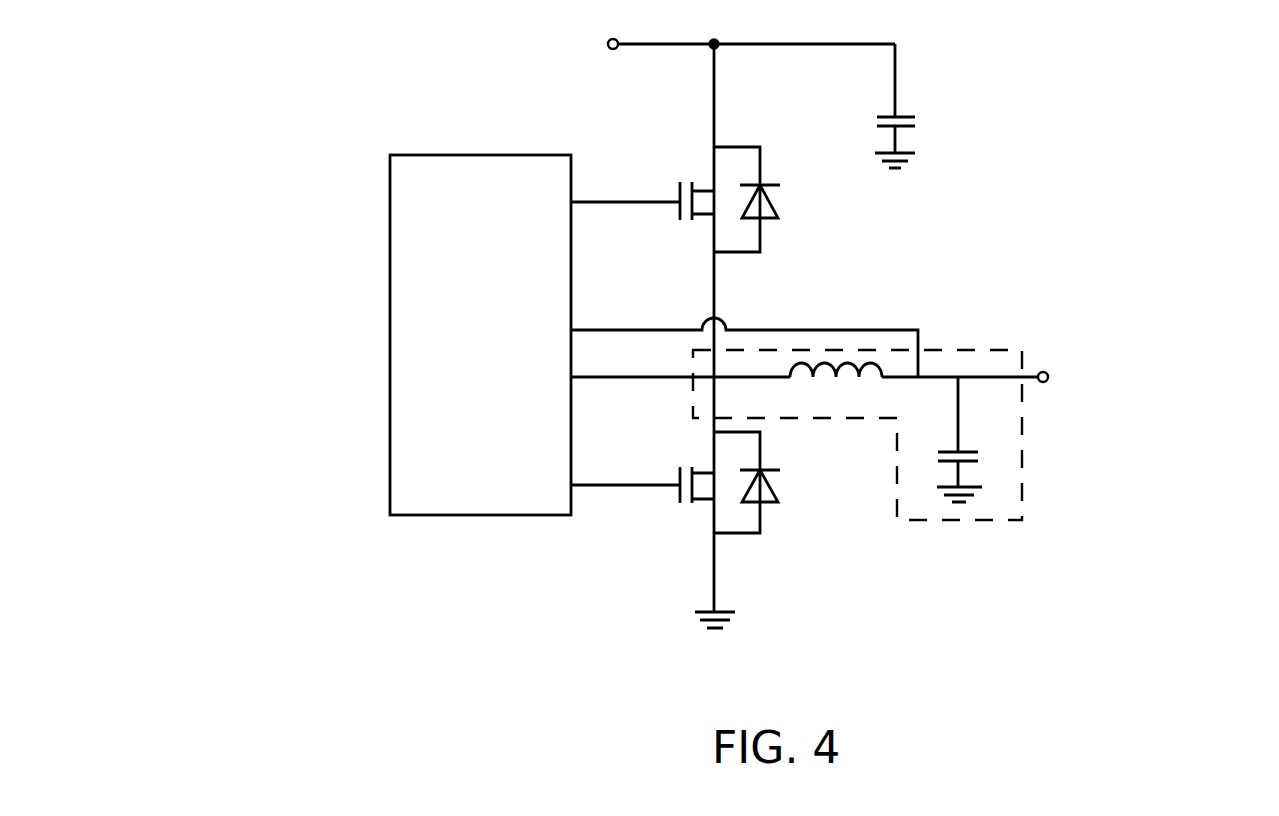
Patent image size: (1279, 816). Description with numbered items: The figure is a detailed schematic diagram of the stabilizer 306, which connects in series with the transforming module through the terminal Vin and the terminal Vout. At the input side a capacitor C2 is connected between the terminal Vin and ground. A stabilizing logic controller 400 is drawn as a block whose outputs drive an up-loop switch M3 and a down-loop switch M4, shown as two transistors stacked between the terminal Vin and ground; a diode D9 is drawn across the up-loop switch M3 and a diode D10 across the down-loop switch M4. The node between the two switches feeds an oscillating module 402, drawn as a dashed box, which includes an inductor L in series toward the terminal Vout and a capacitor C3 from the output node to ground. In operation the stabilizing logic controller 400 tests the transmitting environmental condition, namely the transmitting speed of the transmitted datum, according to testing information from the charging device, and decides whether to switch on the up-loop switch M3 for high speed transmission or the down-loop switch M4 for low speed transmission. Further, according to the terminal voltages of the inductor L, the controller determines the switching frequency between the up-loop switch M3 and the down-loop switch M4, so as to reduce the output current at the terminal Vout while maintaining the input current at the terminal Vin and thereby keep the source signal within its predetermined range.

The stabilizer 306 is at (1077, 112).
The stabilizing logic controller 400 is at (427, 153).
The oscillating module 402 is at (978, 350).
The up-loop switch M3 is at (670, 188).
The down-loop switch M4 is at (673, 473).
The diode D9 is at (797, 195).
The diode D10 is at (799, 482).
The capacitor C2 is at (914, 106).
The capacitor C3 is at (976, 439).
The inductor L is at (836, 387).
The terminal Vin is at (725, 43).
The terminal Vout is at (1000, 376).